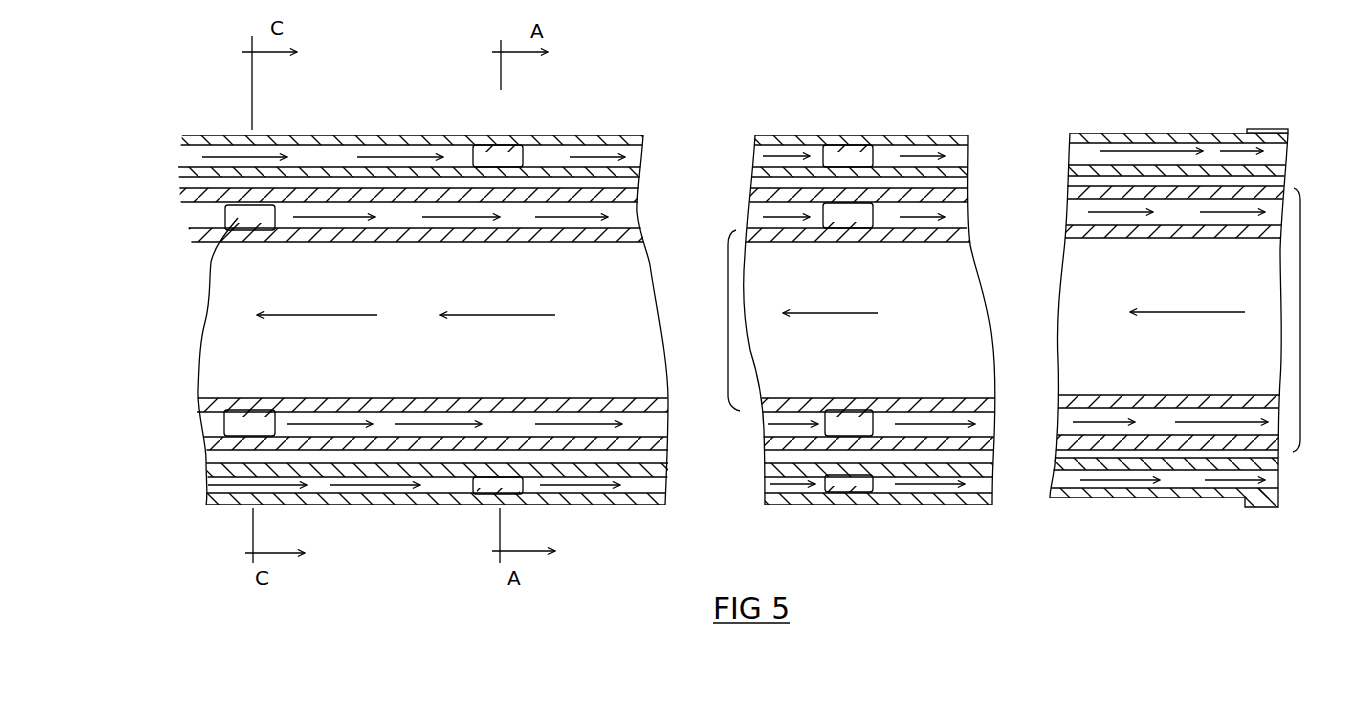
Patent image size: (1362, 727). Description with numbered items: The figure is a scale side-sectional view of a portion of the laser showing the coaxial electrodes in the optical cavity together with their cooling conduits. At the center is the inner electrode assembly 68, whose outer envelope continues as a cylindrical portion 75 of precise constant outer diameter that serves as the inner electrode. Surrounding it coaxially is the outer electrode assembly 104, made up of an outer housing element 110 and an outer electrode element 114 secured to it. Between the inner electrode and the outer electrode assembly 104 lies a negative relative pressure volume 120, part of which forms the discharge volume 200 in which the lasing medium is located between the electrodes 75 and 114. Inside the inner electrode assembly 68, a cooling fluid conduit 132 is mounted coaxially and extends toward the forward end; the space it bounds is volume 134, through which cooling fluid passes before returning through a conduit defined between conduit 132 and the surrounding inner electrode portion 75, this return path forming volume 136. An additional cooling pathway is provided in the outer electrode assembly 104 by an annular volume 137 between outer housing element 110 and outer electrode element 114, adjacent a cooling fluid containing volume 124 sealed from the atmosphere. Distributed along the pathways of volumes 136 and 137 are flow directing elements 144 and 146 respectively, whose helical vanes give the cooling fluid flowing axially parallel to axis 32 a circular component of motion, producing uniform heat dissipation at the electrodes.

The axis 32 is at (1170, 313).
The inner electrode assembly 68 is at (1302, 302).
The cylindrical portion of inner electrode assembly 75 is at (1062, 443).
The outer electrode assembly 104 is at (1300, 157).
The outer housing element 110 is at (1110, 133).
The outer electrode element 114 is at (1070, 167).
The negative relative pressure volume 120 is at (212, 457).
The cooling fluid containing volume 124 is at (1241, 484).
The cooling fluid conduit 132 is at (727, 320).
The volume 134 is at (912, 353).
The return conduit volume 136 is at (739, 212).
The annular cooling fluid pathway volume 137 is at (195, 160).
The flow directing element 144 is at (182, 135).
The flow directing element 146 is at (495, 157).
The discharge volume 200 is at (1280, 177).